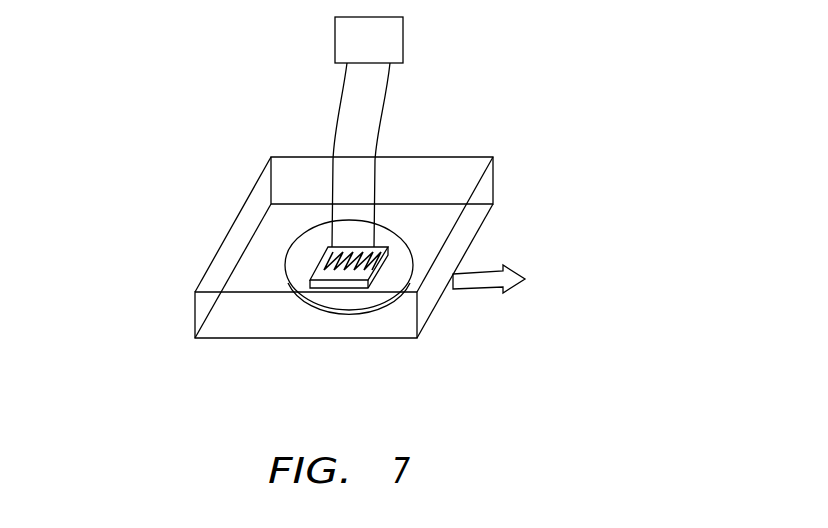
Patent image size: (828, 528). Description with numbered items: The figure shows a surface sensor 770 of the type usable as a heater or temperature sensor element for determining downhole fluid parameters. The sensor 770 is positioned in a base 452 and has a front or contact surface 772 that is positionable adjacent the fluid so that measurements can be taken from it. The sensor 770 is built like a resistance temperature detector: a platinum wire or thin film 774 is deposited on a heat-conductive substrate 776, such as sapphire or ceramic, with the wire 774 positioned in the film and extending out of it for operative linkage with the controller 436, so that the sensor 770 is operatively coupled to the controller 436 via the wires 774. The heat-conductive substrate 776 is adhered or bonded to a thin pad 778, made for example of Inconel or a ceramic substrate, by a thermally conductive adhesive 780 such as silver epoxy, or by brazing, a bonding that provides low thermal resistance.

The sensor 770 is at (265, 83).
The controller 436 is at (391, 52).
The base 452 is at (196, 318).
The front (or contact surface) 772 is at (317, 237).
The wire or thin film (resistor) 774 is at (382, 103).
The heat-conductive substrate 776 is at (384, 256).
The thin pad 778 is at (398, 239).
The thermally conductive adhesive 780 is at (321, 262).